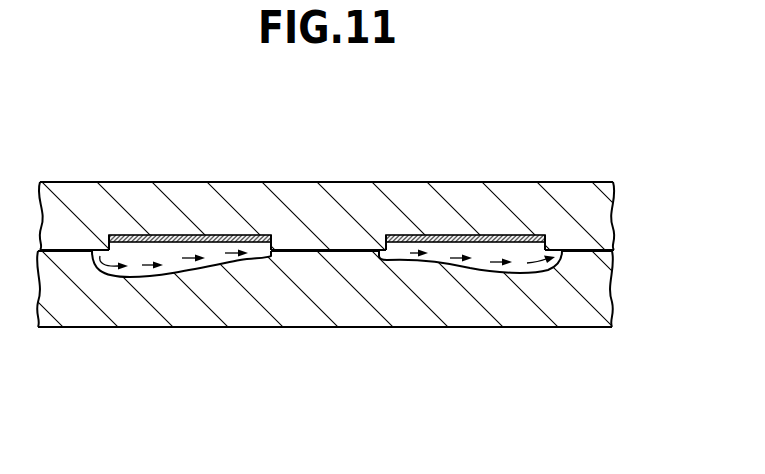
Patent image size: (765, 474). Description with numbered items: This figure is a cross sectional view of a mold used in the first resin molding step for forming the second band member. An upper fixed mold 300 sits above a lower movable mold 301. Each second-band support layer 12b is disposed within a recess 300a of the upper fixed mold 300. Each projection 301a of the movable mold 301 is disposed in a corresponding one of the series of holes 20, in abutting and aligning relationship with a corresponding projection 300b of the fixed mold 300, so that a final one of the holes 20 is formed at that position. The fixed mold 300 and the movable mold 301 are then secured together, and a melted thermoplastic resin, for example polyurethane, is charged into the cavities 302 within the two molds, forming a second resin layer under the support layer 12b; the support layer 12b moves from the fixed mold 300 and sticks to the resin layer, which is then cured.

The upper fixed mold 300 is at (322, 162).
The lower movable mold 301 is at (521, 338).
The projection of the movable mold 301a is at (311, 255).
The second-band support layer 12b is at (190, 236).
The cavity 302 is at (177, 254).
The recess of the upper mold 300a is at (112, 246).
The projection of the fixed mold 300b is at (342, 250).
The hole 20 is at (270, 238).